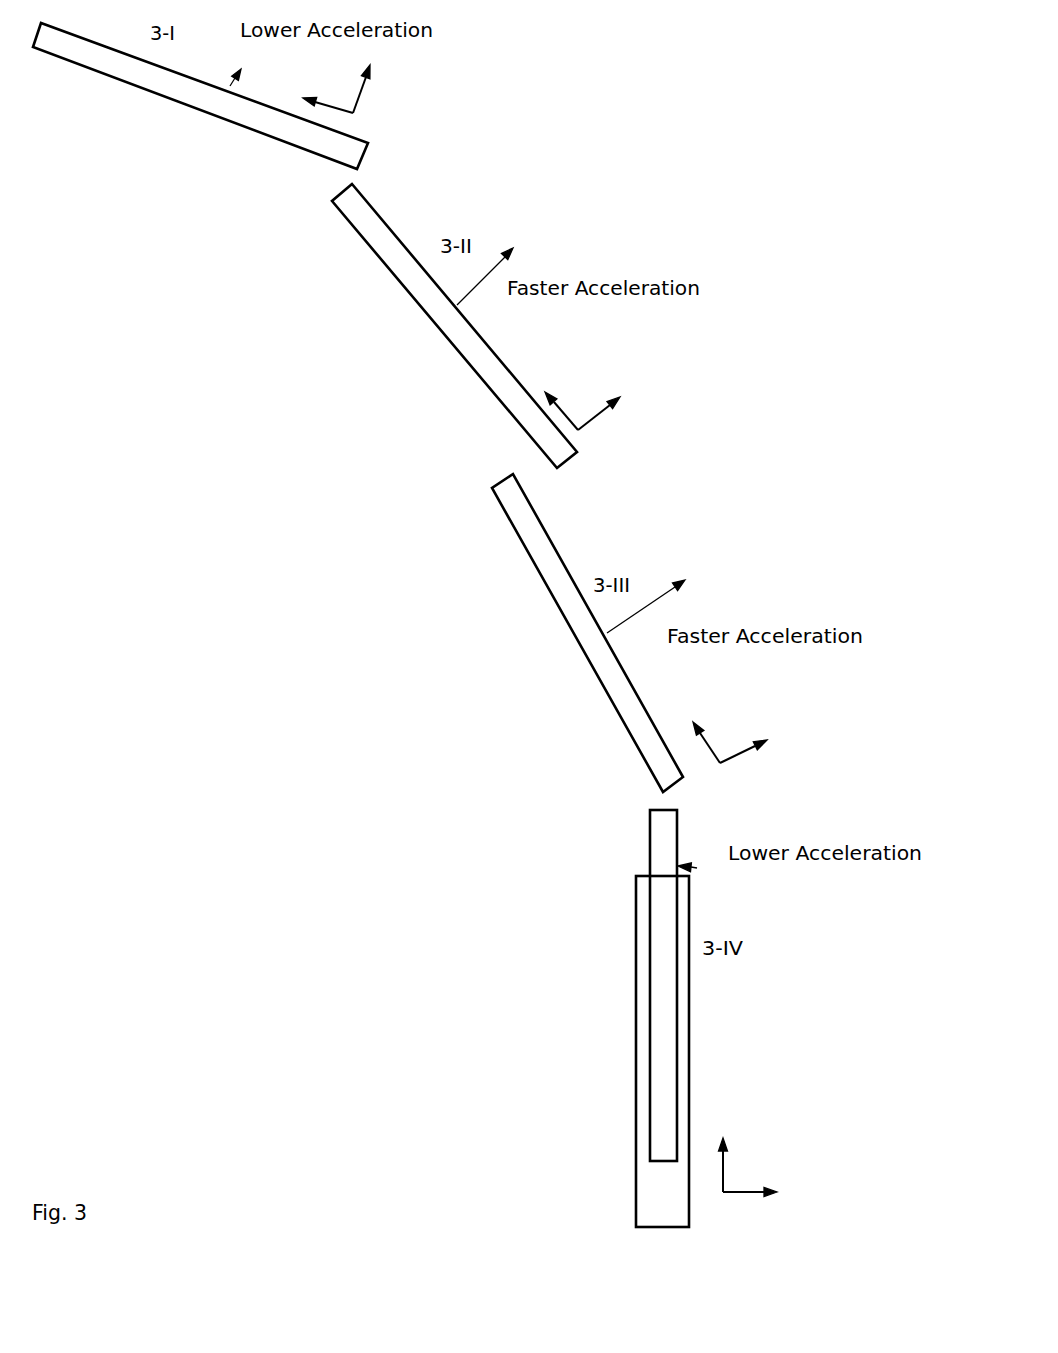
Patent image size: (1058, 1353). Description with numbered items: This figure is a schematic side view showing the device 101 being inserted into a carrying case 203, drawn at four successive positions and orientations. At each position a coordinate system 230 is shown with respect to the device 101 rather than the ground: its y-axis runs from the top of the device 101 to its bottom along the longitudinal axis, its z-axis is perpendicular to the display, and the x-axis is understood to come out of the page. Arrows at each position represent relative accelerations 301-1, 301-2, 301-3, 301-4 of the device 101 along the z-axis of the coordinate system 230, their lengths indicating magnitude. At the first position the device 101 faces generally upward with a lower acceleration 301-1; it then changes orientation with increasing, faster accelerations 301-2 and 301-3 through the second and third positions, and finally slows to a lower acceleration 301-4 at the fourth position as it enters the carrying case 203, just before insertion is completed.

The device 101 is at (178, 97).
The carrying case 203 is at (643, 1166).
The coordinate system 230 is at (379, 104).
The relative acceleration 301-1 is at (235, 78).
The relative acceleration 301-2 is at (473, 287).
The relative acceleration 301-3 is at (625, 622).
The relative acceleration 301-4 is at (697, 868).